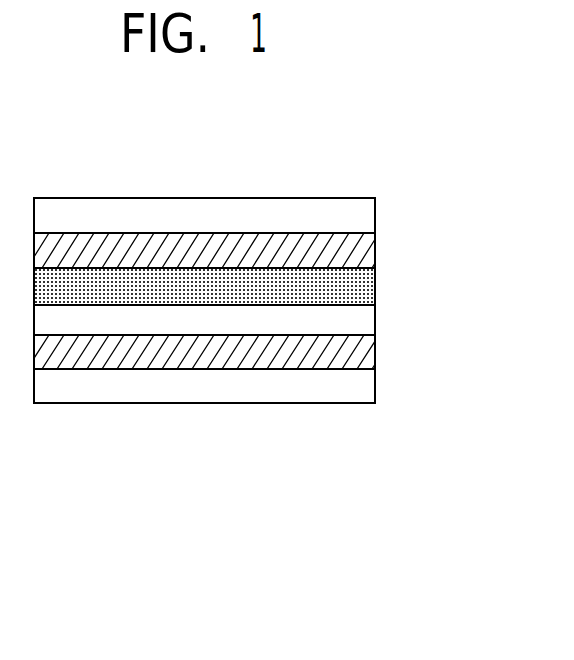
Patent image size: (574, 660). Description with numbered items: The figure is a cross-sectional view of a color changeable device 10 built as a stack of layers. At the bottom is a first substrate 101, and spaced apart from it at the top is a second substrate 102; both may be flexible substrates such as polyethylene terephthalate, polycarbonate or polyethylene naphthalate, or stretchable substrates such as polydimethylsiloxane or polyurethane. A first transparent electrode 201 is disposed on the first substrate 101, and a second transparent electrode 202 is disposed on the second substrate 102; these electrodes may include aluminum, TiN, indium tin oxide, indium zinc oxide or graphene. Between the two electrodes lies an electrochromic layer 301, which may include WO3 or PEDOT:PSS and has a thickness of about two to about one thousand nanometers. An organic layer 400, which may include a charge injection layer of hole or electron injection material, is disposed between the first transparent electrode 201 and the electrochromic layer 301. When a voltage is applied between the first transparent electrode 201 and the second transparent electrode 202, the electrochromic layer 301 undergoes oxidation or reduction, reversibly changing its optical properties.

The color changeable device 10 is at (353, 164).
The second substrate 102 is at (365, 215).
The second transparent electrode 202 is at (366, 250).
The electrochromic layer 301 is at (365, 283).
The organic layer 400 is at (366, 317).
The first transparent electrode 201 is at (367, 352).
The first substrate 101 is at (367, 386).